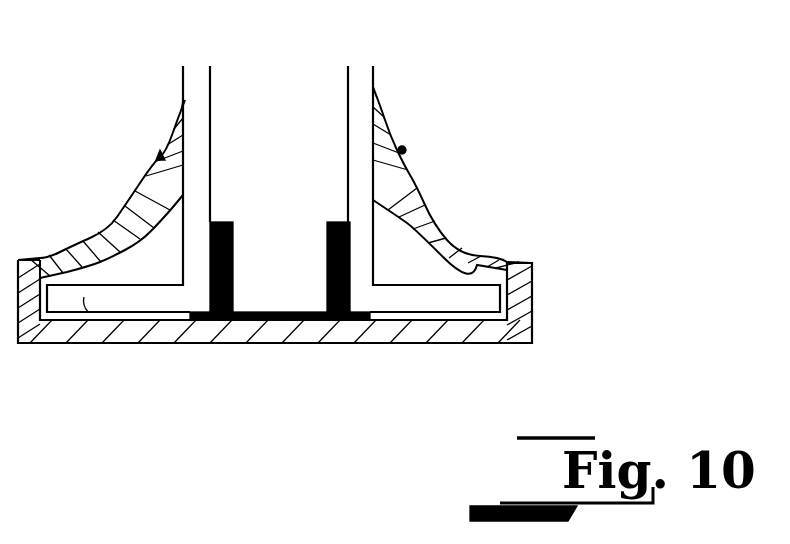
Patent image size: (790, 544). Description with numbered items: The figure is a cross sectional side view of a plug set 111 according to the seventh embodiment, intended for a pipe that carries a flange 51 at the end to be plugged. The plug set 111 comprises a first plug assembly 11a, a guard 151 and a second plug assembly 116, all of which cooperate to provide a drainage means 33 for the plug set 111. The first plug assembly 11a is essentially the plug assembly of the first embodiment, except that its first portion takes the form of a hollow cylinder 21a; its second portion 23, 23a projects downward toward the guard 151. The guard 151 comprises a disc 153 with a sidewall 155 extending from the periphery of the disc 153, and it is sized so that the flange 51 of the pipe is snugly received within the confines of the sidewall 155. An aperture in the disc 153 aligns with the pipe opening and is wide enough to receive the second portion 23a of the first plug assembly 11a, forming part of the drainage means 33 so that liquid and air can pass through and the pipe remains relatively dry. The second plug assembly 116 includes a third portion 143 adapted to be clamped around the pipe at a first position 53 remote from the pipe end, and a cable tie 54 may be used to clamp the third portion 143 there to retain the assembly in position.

The first position 53 is at (363, 120).
The cable tie 54 is at (402, 150).
The second plug assembly 116 is at (452, 180).
The third portion 143 is at (95, 240).
The plug set 111 is at (530, 110).
The first plug assembly 11a is at (280, 257).
The hollow cylinder 21a is at (233, 280).
The base plate 23 is at (275, 376).
The drainage means 33 is at (240, 350).
The second portion 23a is at (283, 345).
The disc 153 is at (400, 315).
The flange 51 is at (320, 346).
The guard 151 is at (503, 290).
The sidewall 155 is at (517, 305).